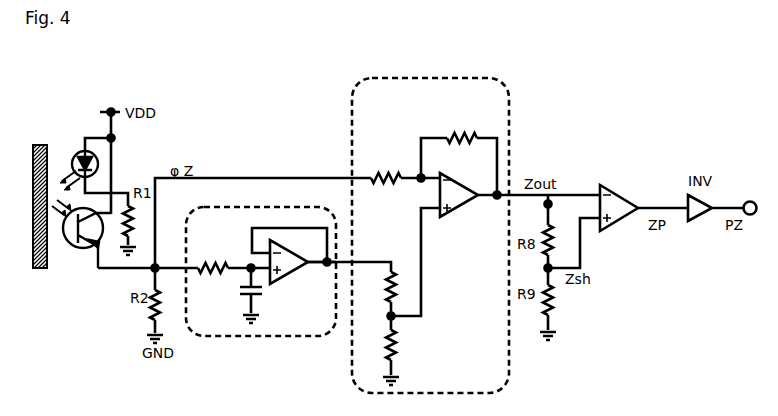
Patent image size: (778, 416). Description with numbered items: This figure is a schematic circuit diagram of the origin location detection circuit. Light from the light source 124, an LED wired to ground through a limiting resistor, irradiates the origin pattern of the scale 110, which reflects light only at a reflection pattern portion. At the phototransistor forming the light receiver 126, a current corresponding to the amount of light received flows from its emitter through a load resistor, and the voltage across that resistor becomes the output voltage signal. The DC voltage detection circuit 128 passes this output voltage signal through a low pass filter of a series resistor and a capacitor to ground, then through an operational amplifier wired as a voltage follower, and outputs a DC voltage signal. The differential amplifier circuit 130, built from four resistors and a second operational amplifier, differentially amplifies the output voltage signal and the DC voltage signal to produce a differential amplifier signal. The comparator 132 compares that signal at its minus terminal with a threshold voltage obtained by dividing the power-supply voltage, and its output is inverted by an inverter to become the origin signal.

The scale 110 is at (40, 145).
The light source 124 is at (74, 159).
The light receiver 126 is at (80, 248).
The DC voltage detection circuit 128 is at (249, 209).
The differential amplifier circuit 130 is at (432, 79).
The comparator 132 is at (604, 191).